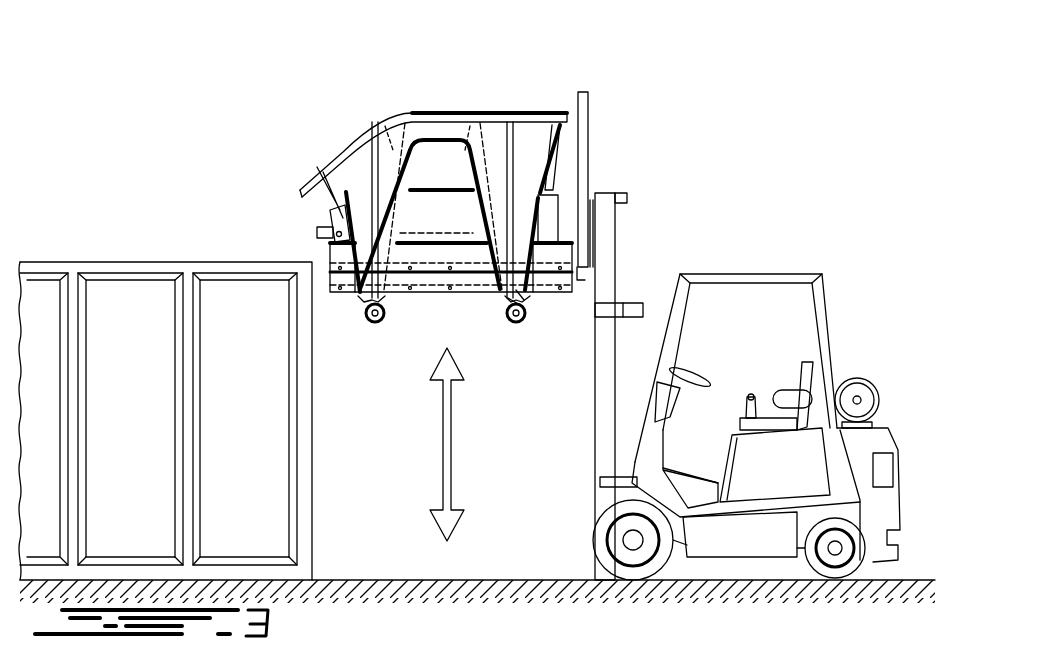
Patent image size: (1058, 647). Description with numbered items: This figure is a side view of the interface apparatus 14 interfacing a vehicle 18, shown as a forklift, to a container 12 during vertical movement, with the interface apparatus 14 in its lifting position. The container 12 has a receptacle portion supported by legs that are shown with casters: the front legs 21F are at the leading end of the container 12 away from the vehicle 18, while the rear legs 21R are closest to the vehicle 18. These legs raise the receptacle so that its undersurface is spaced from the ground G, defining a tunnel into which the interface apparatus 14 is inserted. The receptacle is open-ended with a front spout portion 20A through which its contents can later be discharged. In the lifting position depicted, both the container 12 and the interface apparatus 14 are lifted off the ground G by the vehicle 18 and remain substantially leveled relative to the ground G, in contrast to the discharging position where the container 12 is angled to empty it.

The container 12 is at (456, 92).
The front spout portion 20A is at (312, 182).
The rear legs 21R is at (371, 322).
The front legs 21F is at (530, 293).
The interface apparatus 14 is at (466, 307).
The vehicle 18 is at (790, 218).
The ground G is at (872, 590).